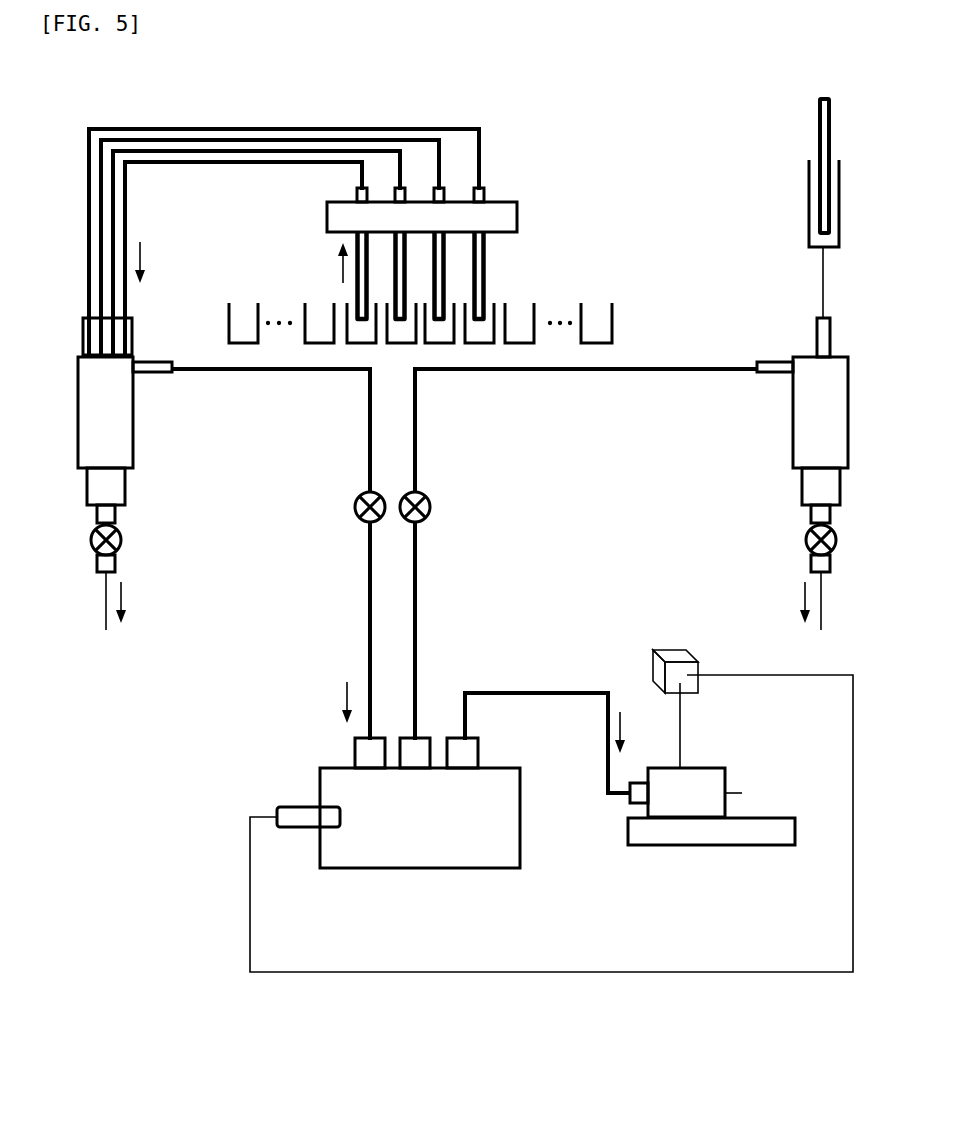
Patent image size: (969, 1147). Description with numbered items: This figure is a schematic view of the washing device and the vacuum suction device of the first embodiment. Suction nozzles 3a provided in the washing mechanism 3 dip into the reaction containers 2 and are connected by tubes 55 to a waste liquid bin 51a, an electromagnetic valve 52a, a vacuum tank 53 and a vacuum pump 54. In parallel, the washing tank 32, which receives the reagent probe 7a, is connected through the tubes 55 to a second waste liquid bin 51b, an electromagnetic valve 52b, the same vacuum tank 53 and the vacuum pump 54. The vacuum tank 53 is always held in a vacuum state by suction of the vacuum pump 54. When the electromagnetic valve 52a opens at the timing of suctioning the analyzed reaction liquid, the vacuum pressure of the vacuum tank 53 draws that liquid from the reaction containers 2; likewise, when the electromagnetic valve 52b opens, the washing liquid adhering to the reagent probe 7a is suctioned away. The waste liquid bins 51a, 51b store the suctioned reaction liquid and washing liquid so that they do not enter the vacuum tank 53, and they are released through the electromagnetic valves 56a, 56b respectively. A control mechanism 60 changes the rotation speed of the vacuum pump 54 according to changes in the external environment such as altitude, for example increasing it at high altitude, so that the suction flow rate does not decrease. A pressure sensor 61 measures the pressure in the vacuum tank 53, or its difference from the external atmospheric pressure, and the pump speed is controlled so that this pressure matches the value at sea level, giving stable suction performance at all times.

The reaction containers 2 is at (613, 325).
The washing mechanism 3 is at (518, 202).
The suction nozzles 3a is at (486, 283).
The reagent probe 7a is at (832, 137).
The washing tank 32 is at (840, 240).
The waste liquid bin 51a is at (124, 416).
The waste liquid bin 51b is at (803, 418).
The electromagnetic valve 52a is at (353, 503).
The electromagnetic valve 52b is at (432, 505).
The vacuum tank 53 is at (405, 855).
The vacuum pump 54 is at (694, 790).
The tubes 55 is at (366, 129).
The electromagnetic valve 56a is at (118, 548).
The electromagnetic valve 56b is at (802, 548).
The control mechanism 60 is at (676, 657).
The pressure sensor 61 is at (290, 815).